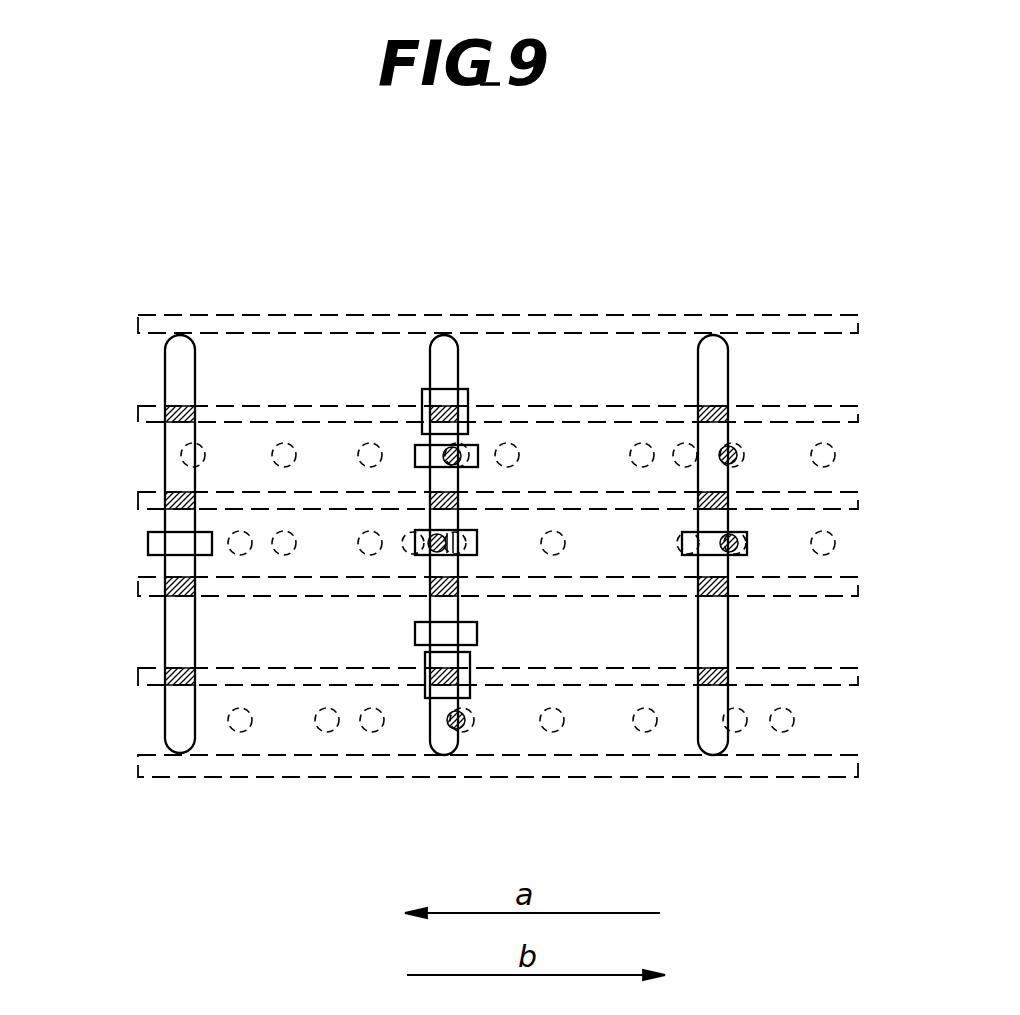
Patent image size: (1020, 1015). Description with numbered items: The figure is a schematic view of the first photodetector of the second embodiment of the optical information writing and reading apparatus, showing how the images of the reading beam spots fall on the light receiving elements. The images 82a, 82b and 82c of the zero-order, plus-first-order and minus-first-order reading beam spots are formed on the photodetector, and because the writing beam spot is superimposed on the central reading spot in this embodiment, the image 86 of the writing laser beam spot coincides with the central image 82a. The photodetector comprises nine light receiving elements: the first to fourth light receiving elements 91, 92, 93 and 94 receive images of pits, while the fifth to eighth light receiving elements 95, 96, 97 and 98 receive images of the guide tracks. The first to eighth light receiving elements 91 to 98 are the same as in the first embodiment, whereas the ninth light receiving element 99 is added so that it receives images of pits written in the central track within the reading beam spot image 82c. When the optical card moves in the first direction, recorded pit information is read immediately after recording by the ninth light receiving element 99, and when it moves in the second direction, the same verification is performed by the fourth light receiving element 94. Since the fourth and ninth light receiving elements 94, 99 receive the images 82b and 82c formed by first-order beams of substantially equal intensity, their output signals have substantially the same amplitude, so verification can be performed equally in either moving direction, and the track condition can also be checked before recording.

The image of zero-order reading beam spot 82a is at (430, 357).
The image of +1-order reading beam spot 82b is at (728, 350).
The image of −1-order reading beam spot 82c is at (195, 358).
The image of the writing laser beam spot 86 is at (445, 560).
The first light receiving element 91 is at (477, 545).
The second light receiving element 92 is at (415, 452).
The third light receiving element 93 is at (415, 628).
The fourth light receiving element 94 is at (745, 535).
The fifth light receiving element 95 is at (468, 430).
The sixth light receiving element 96 is at (478, 440).
The seventh light receiving element 97 is at (472, 656).
The eighth light receiving element 98 is at (445, 688).
The ninth light receiving element 99 is at (148, 546).